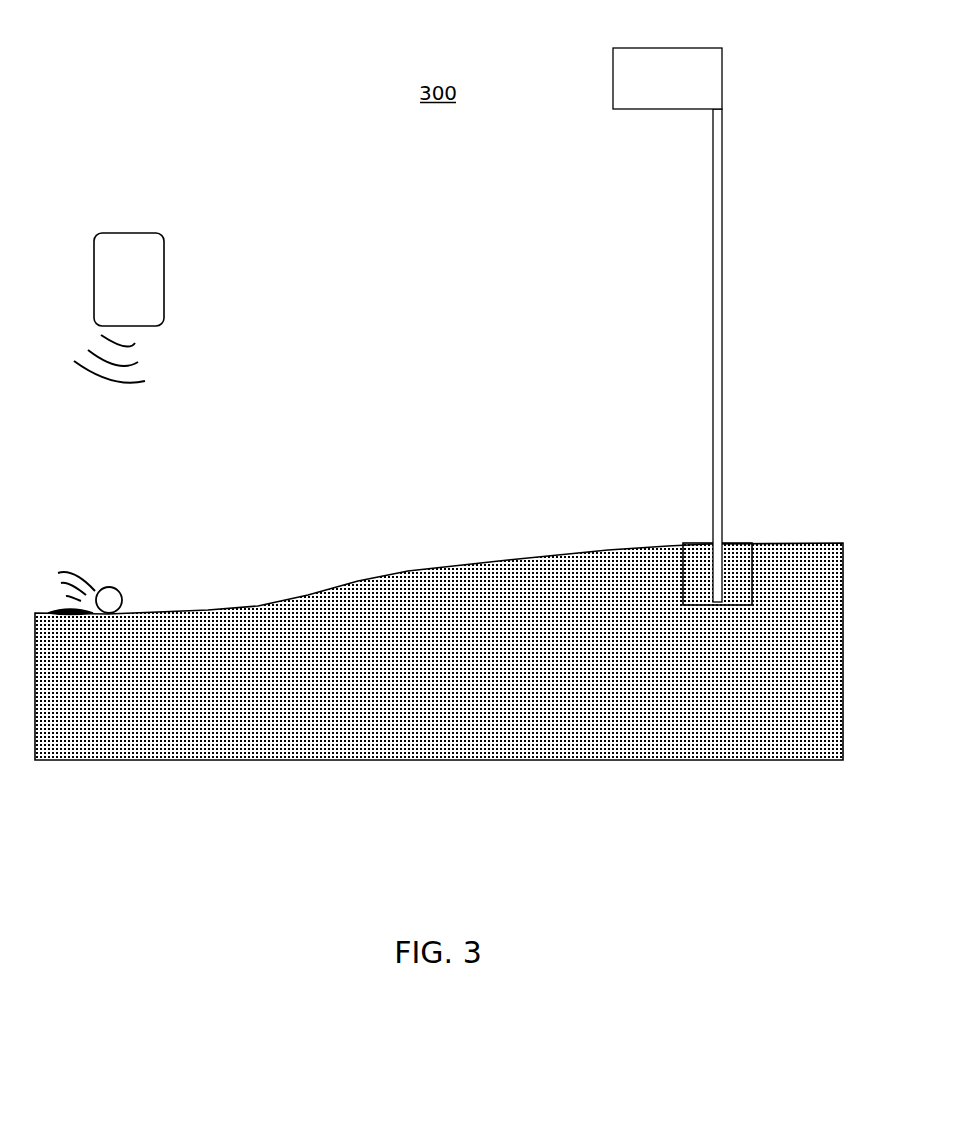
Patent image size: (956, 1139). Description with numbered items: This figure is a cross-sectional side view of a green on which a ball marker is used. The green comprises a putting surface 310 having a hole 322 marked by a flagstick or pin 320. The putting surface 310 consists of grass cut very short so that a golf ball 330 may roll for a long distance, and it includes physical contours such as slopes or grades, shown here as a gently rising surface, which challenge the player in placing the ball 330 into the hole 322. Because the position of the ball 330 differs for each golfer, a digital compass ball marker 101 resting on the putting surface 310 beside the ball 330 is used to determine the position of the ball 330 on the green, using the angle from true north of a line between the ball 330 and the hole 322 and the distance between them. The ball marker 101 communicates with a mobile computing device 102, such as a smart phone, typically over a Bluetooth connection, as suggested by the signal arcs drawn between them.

The putting surface 310 is at (350, 572).
The flagstick or pin 320 is at (716, 240).
The hole 322 is at (730, 535).
The golf ball 330 is at (112, 584).
The digital compass ball marker 101 is at (58, 606).
The mobile computing device 102 is at (119, 308).